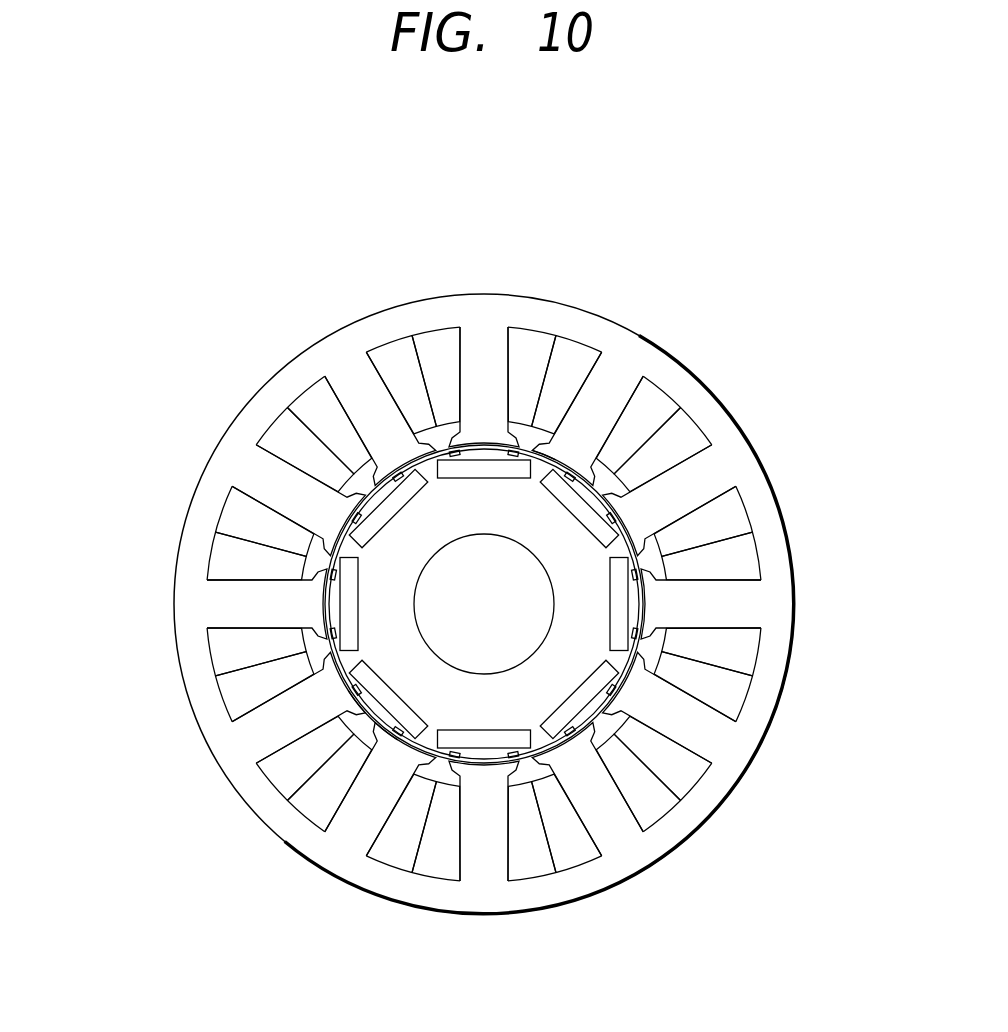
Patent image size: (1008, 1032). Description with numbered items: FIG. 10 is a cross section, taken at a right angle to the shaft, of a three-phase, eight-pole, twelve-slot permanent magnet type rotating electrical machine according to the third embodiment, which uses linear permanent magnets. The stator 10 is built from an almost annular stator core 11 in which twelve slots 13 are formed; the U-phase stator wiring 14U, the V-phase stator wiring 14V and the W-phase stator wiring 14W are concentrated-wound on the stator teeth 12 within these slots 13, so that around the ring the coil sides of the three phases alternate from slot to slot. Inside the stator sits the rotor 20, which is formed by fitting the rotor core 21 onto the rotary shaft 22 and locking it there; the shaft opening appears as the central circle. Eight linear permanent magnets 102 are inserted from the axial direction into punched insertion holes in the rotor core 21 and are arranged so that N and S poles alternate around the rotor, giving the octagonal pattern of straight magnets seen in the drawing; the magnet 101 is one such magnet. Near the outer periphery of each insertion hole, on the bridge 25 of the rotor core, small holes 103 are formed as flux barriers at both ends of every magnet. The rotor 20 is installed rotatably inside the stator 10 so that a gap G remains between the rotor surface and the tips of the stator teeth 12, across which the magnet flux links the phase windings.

The stator 10 is at (168, 607).
The stator core 11 is at (233, 462).
The stator teeth 12 is at (358, 376).
The slots 13 is at (213, 690).
The U-phase stator wiring 14U is at (442, 352).
The V-phase stator wiring 14V is at (578, 356).
The W-phase stator wiring 14W is at (312, 400).
The rotor 20 is at (327, 562).
The rotor core 21 is at (480, 500).
The rotary shaft 22 is at (500, 642).
The bridge 25 is at (370, 718).
The permanent magnet 101 is at (485, 750).
The linear permanent magnets 102 is at (587, 518).
The holes 103 is at (642, 632).
The gap G is at (533, 449).